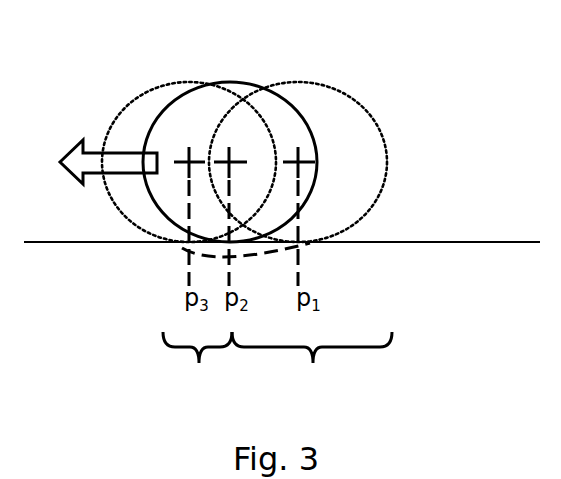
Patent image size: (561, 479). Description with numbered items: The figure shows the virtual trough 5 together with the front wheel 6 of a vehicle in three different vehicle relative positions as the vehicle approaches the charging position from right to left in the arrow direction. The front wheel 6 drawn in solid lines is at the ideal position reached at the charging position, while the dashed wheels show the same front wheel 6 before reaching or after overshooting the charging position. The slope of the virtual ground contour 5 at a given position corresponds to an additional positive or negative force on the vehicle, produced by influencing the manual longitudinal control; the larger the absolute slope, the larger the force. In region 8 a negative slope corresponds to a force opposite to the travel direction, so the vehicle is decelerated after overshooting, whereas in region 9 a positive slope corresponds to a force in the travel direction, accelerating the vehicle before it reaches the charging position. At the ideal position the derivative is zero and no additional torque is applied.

The virtual trough 5 is at (267, 250).
The front wheel 6 is at (233, 82).
The region of negative slope 8 is at (197, 364).
The region of positive slope 9 is at (312, 361).